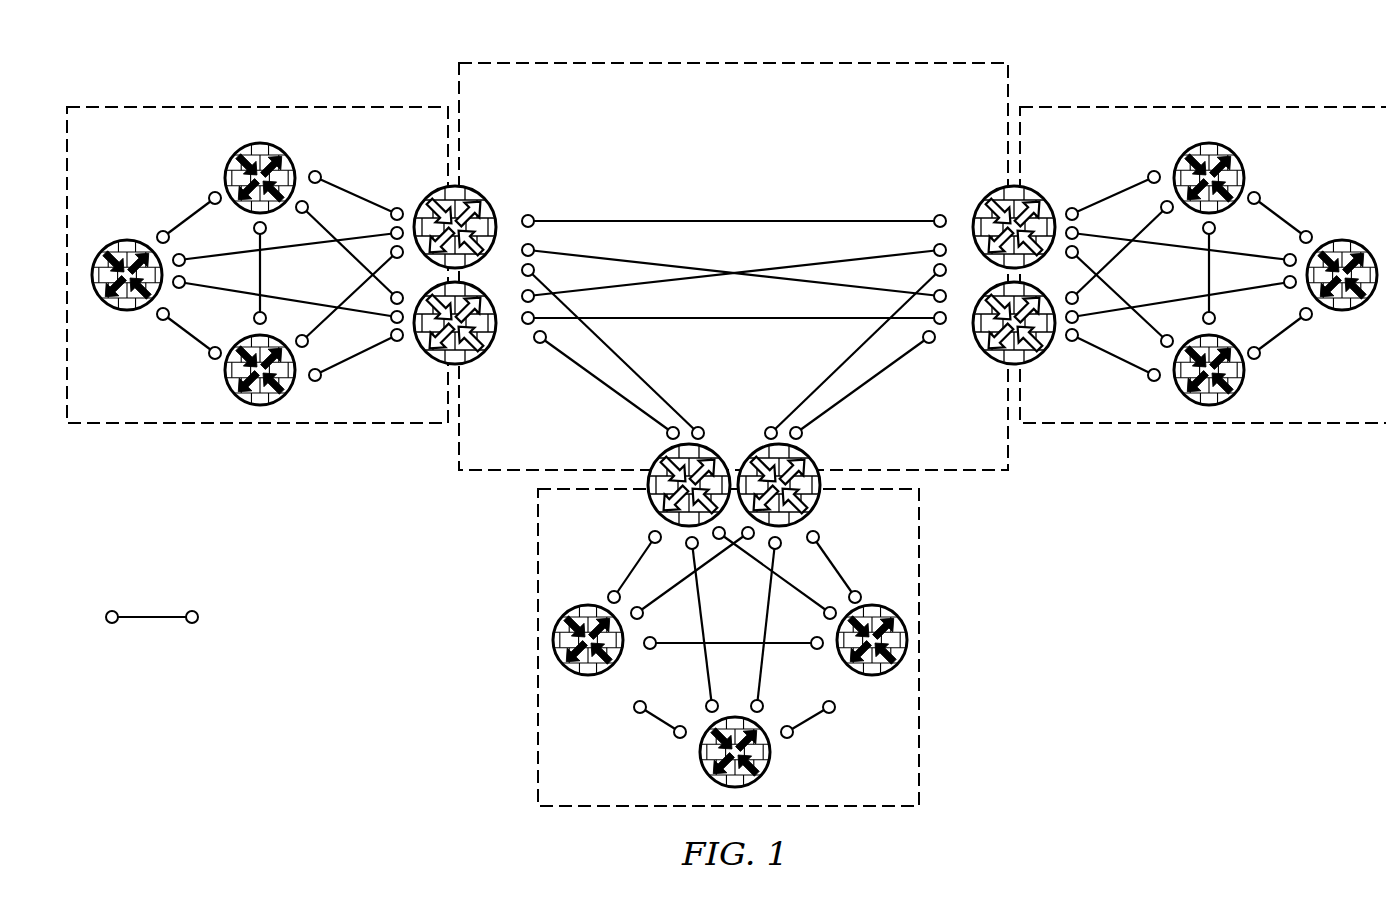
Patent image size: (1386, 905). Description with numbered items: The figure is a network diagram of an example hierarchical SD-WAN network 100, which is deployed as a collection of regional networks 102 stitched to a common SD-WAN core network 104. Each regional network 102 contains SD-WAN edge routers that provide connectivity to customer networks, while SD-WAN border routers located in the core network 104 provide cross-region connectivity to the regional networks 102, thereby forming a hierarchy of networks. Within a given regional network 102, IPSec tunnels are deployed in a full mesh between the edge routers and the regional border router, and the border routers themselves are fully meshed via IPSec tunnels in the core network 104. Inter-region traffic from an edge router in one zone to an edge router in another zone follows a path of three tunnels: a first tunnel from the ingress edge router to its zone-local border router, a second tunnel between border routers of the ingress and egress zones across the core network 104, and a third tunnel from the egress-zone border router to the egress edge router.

The SD-WAN network 100 is at (323, 43).
The regional network 102 is at (137, 175).
The SD-WAN core network 104 is at (749, 141).